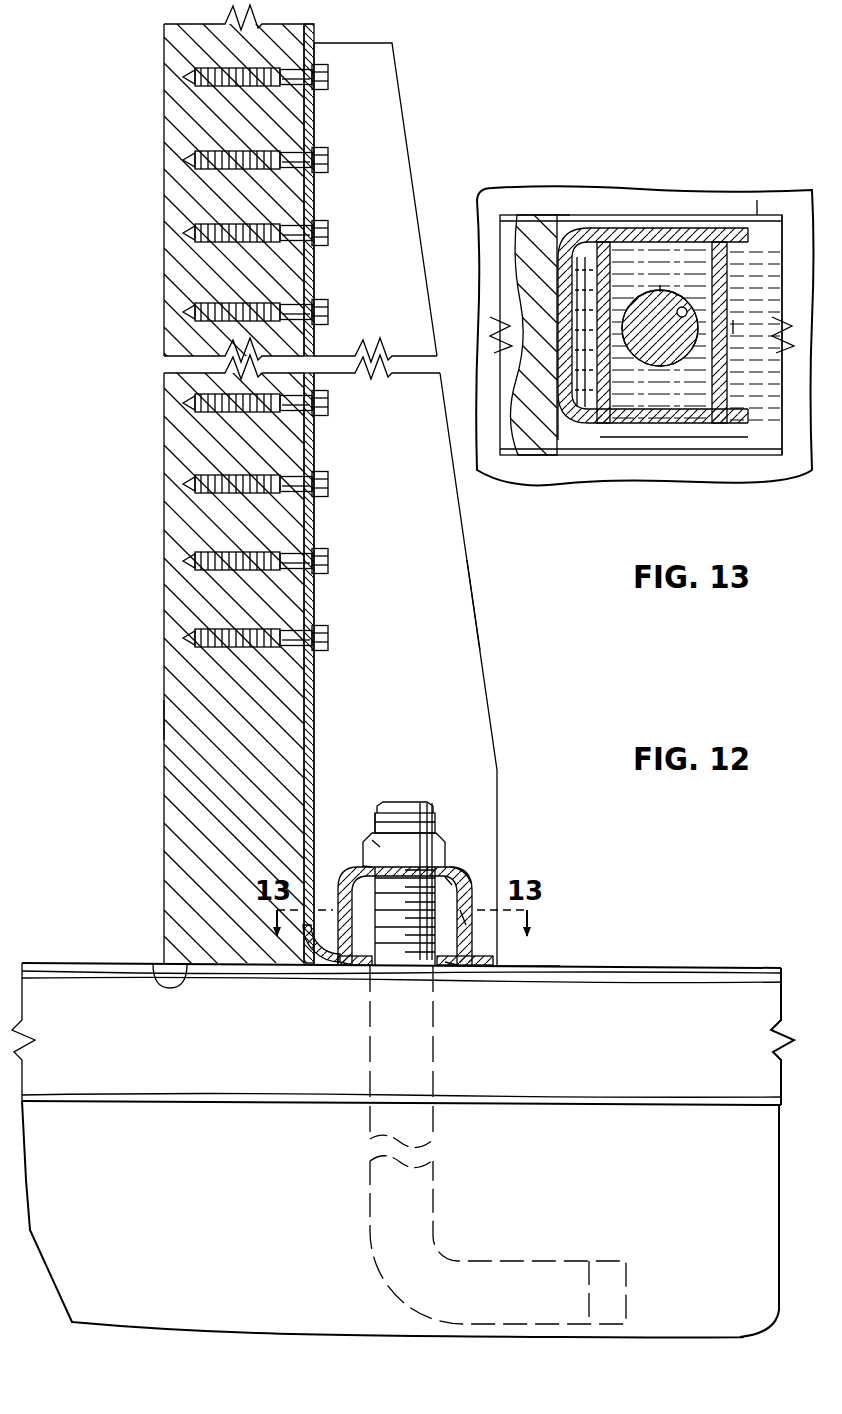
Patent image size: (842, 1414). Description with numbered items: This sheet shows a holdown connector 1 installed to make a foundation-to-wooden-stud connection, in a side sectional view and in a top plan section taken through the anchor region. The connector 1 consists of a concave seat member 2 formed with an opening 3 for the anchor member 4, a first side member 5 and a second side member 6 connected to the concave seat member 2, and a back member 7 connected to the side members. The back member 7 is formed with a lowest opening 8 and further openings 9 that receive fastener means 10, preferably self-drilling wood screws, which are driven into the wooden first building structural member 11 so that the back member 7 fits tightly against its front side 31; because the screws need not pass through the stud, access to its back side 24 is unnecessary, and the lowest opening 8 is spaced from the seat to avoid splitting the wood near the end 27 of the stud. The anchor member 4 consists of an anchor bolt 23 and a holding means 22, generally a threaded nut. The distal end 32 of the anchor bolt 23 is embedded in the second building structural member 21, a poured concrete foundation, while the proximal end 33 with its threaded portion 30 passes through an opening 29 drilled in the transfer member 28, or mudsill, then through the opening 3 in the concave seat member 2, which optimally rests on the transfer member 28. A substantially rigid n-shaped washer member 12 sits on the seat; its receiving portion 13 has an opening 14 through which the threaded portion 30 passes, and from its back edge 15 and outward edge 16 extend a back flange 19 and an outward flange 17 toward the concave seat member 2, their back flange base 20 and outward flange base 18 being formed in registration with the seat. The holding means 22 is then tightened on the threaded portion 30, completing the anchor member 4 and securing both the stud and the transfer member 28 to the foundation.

In FIG. 12, the connector 1 is at (478, 592).
In FIG. 13, the connector 1 is at (618, 222).
In FIG. 12, the concave seat member 2 is at (500, 980).
In FIG. 13, the concave seat member 2 is at (737, 327).
In FIG. 12, the opening 3 is at (458, 956).
In FIG. 13, the opening 3 is at (670, 308).
In FIG. 12, the anchor member 4 is at (440, 812).
In FIG. 13, the anchor member 4 is at (660, 285).
In FIG. 13, the first side member 5 is at (687, 437).
In FIG. 12, the second side member 6 is at (446, 678).
In FIG. 13, the second side member 6 is at (720, 222).
In FIG. 12, the back member 7 is at (312, 713).
In FIG. 13, the back member 7 is at (560, 313).
In FIG. 12, the opening 8 is at (318, 636).
In FIG. 12, the openings 9 is at (329, 77).
In FIG. 12, the fastener means 10 is at (220, 87).
In FIG. 12, the first building structural member 11 is at (162, 719).
In FIG. 13, the first building structural member 11 is at (565, 441).
In FIG. 12, the washer member 12 is at (476, 872).
In FIG. 13, the washer member 12 is at (735, 383).
In FIG. 12, the receiving portion 13 is at (450, 880).
In FIG. 12, the opening 14 is at (380, 862).
In FIG. 12, the back edge 15 is at (378, 875).
In FIG. 12, the outward edge 16 is at (464, 866).
In FIG. 12, the outward flange 17 is at (465, 918).
In FIG. 13, the outward flange 17 is at (715, 400).
In FIG. 12, the outward flange base 18 is at (452, 965).
In FIG. 12, the back flange 19 is at (333, 927).
In FIG. 13, the back flange 19 is at (607, 290).
In FIG. 12, the back flange base 20 is at (345, 967).
In FIG. 12, the second building structural member 21 is at (156, 1185).
In FIG. 13, the second building structural member 21 is at (510, 473).
In FIG. 12, the holding means 22 is at (372, 840).
In FIG. 12, the anchor bolt 23 is at (407, 806).
In FIG. 13, the anchor bolt 23 is at (652, 338).
In FIG. 12, the back side 24 is at (163, 518).
In FIG. 12, the end 27 is at (157, 967).
In FIG. 12, the transfer member 28 is at (68, 965).
In FIG. 13, the transfer member 28 is at (758, 200).
In FIG. 12, the opening 29 is at (431, 1036).
In FIG. 12, the threaded portion 30 is at (374, 812).
In FIG. 12, the front side 31 is at (307, 33).
In FIG. 13, the front side 31 is at (570, 213).
In FIG. 12, the distal end 32 is at (589, 1261).
In FIG. 12, the proximal end 33 is at (390, 800).